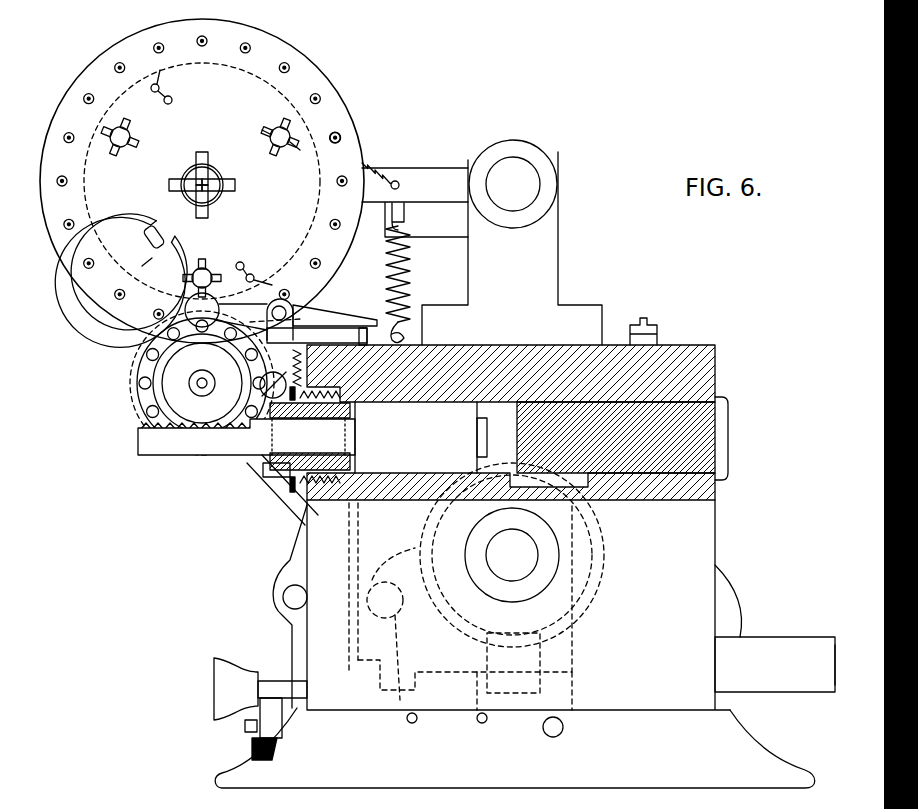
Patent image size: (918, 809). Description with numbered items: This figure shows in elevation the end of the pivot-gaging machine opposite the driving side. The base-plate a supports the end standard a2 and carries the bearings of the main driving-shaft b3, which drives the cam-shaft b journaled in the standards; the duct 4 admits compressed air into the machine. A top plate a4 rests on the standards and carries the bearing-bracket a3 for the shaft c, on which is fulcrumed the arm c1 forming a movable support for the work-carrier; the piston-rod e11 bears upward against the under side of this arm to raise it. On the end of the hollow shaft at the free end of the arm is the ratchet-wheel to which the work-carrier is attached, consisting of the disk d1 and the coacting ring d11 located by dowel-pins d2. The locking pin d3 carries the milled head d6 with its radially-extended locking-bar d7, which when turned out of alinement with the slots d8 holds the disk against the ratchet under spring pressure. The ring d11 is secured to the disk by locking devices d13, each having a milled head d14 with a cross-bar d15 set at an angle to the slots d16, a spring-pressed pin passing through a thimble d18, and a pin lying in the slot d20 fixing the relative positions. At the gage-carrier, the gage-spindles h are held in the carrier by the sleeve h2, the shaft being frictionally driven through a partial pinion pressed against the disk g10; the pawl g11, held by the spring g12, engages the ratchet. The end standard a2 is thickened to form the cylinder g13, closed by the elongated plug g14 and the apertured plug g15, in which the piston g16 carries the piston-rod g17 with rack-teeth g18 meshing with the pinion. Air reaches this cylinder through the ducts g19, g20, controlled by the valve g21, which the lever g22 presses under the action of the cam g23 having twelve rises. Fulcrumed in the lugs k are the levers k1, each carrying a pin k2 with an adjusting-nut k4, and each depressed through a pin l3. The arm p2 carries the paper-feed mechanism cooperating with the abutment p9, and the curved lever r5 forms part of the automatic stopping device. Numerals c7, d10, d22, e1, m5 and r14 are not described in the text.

The base-plate a is at (740, 745).
The end standard a2 is at (700, 542).
The bearing-bracket a3 is at (512, 248).
The top plate a4 is at (456, 352).
The shaft b is at (512, 555).
The main driving-shaft b3 is at (832, 664).
The shaft c is at (513, 184).
The arm c1 is at (415, 191).
The spring c7 is at (412, 265).
The disk d1 is at (262, 188).
The dowel-pins d2 is at (171, 99).
The pin d3 is at (229, 185).
The milled head d6 is at (216, 182).
The locking-bar d7 is at (198, 160).
The slots d8 is at (170, 184).
The holes d10 is at (321, 99).
The ring d11 is at (318, 80).
The locking devices d13 is at (108, 134).
The milled head d14 is at (305, 157).
The cross-bar d15 is at (150, 236).
The slots d16 is at (255, 128).
The thimble d18 is at (223, 172).
The slot d20 is at (137, 267).
The hole d22 is at (341, 137).
The spring e1 is at (380, 167).
The piston-rod e11 is at (376, 230).
The disk g10 is at (150, 352).
The pawl g11 is at (222, 363).
The spring g12 is at (310, 384).
The cylinder g13 is at (496, 435).
The elongated plug g14 is at (728, 435).
The apertured plug g15 is at (352, 462).
The piston g16 is at (416, 437).
The piston-rod g17 is at (246, 437).
The rack-teeth g18 is at (178, 436).
The duct g19 is at (350, 512).
The duct g20 is at (605, 505).
The valve g21 is at (400, 720).
The lever g22 is at (465, 608).
The cam g23 is at (610, 592).
The gage-spindles h is at (142, 380).
The sleeve h2 is at (140, 394).
The lugs k is at (308, 331).
The levers k1 is at (322, 320).
The pin k2 is at (185, 308).
The adjusting-nut k4 is at (284, 309).
The pin l3 is at (365, 320).
The bracket m5 is at (287, 632).
The arm p2 is at (260, 496).
The abutment p9 is at (275, 525).
The lever r5 is at (742, 604).
The horn r14 is at (270, 690).
The duct 4 is at (560, 734).